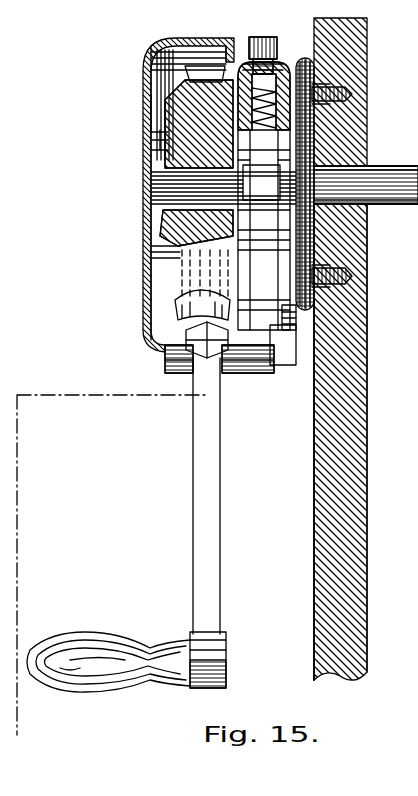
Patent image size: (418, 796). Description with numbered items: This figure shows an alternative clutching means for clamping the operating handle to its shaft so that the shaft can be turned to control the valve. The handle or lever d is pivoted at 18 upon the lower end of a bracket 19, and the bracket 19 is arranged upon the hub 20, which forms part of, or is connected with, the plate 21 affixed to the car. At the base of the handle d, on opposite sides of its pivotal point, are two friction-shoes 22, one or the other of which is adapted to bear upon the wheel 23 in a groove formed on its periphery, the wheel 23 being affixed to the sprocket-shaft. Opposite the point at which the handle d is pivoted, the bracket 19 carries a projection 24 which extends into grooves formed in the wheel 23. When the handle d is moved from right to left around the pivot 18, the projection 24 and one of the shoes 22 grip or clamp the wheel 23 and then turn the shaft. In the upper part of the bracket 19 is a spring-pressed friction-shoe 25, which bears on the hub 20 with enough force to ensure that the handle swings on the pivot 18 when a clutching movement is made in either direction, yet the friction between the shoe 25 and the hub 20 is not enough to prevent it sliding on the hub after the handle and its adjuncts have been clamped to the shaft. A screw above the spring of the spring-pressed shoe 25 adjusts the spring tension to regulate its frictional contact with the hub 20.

The pivot 18 is at (167, 347).
The bracket 19 is at (238, 74).
The hub 20 is at (261, 182).
The plate 21 is at (313, 162).
The friction-shoes 22 is at (203, 66).
The wheel 23 is at (157, 110).
The projection 24 is at (160, 138).
The spring-pressed friction-shoe 25 is at (295, 132).
The handle or lever d is at (210, 467).